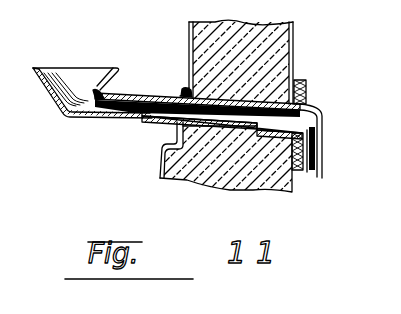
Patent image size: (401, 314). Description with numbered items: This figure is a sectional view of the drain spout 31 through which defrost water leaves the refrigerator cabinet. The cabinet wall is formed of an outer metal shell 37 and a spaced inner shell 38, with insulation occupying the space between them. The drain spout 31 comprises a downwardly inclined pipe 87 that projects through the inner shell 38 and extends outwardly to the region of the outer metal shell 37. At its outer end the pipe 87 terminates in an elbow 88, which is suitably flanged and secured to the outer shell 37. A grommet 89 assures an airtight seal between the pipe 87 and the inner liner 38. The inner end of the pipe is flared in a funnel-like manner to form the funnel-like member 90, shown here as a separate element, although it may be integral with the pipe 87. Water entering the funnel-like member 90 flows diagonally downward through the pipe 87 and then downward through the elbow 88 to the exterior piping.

The drain spout 31 is at (137, 87).
The outer metal shell 37 is at (296, 38).
The inner shell 38 is at (191, 56).
The downwardly inclined pipe 87 is at (240, 102).
The elbow 88 is at (324, 114).
The grommet 89 is at (173, 131).
The funnel-like member 90 is at (81, 75).